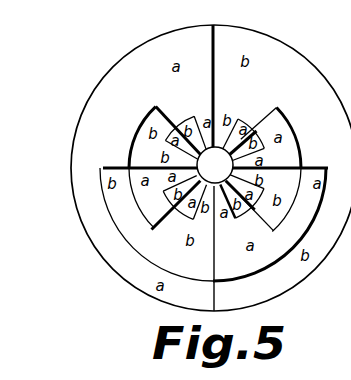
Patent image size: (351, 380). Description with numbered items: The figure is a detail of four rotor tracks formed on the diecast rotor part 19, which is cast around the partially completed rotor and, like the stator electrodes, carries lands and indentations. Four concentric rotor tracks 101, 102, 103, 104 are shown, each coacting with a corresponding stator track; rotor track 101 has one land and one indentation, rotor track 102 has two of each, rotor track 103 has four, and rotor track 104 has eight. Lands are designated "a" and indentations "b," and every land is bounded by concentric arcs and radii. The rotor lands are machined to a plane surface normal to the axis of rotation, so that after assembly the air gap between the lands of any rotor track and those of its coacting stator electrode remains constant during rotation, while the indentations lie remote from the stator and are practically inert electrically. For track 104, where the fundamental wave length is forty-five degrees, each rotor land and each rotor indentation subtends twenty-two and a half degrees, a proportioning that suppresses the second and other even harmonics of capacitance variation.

The rotor part 19 is at (93, 237).
The rotor track 101 is at (204, 224).
The rotor track 102 is at (209, 169).
The rotor track 103 is at (203, 167).
The rotor track 104 is at (215, 165).